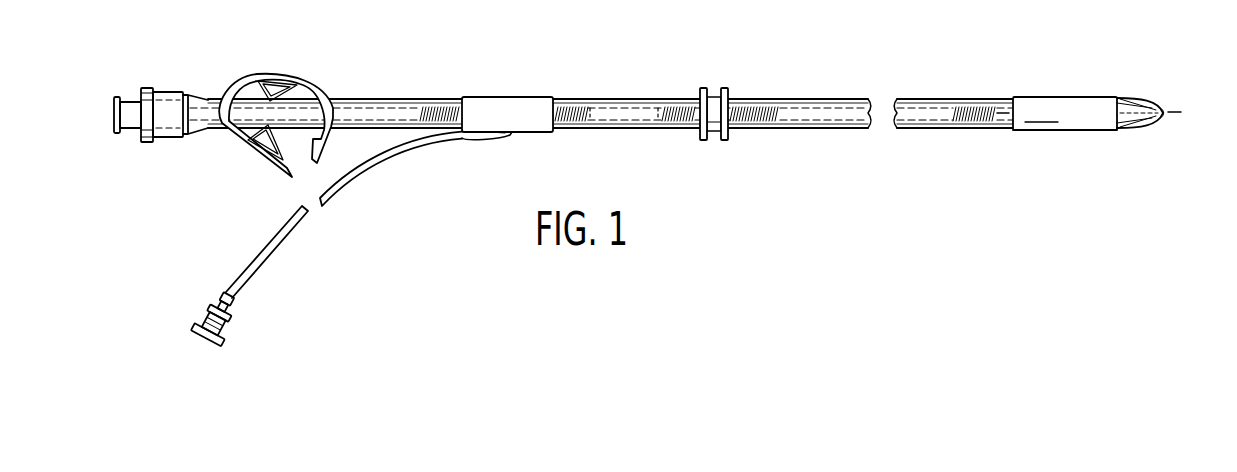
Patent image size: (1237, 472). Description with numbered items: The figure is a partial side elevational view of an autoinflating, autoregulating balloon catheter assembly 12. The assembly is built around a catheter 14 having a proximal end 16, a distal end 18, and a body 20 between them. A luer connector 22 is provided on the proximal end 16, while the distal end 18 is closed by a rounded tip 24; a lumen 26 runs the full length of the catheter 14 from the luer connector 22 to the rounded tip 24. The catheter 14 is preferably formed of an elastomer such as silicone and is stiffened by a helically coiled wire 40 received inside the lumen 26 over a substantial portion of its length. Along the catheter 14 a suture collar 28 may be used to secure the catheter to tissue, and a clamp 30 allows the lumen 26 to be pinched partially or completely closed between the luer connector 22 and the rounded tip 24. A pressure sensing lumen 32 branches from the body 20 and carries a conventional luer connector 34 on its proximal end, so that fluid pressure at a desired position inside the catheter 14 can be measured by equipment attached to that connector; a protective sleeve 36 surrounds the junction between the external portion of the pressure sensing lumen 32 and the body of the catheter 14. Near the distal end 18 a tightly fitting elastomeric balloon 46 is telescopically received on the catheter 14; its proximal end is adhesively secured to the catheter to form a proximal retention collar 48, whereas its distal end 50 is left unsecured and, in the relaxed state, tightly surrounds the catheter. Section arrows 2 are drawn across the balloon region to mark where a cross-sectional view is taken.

The section line 2- 2 is at (1174, 104).
The catheter assembly 12 is at (601, 103).
The catheter 14 is at (601, 107).
The proximal end 16 is at (183, 79).
The distal end 18 is at (1175, 130).
The body 20 is at (372, 98).
The luer connector 22 is at (168, 91).
The rounded tip 24 is at (1170, 115).
The lumen 26 is at (840, 113).
The suture collar 28 is at (713, 141).
The clamp 30 is at (302, 76).
The pressure sensing lumen 32 is at (375, 178).
The luer connector 34 is at (186, 320).
The protective sleeve 36 is at (505, 97).
The helically coiled wire 40 is at (750, 118).
The balloon 46 is at (1080, 105).
The proximal retention collar 48 is at (1020, 97).
The distal end 50 is at (1110, 132).